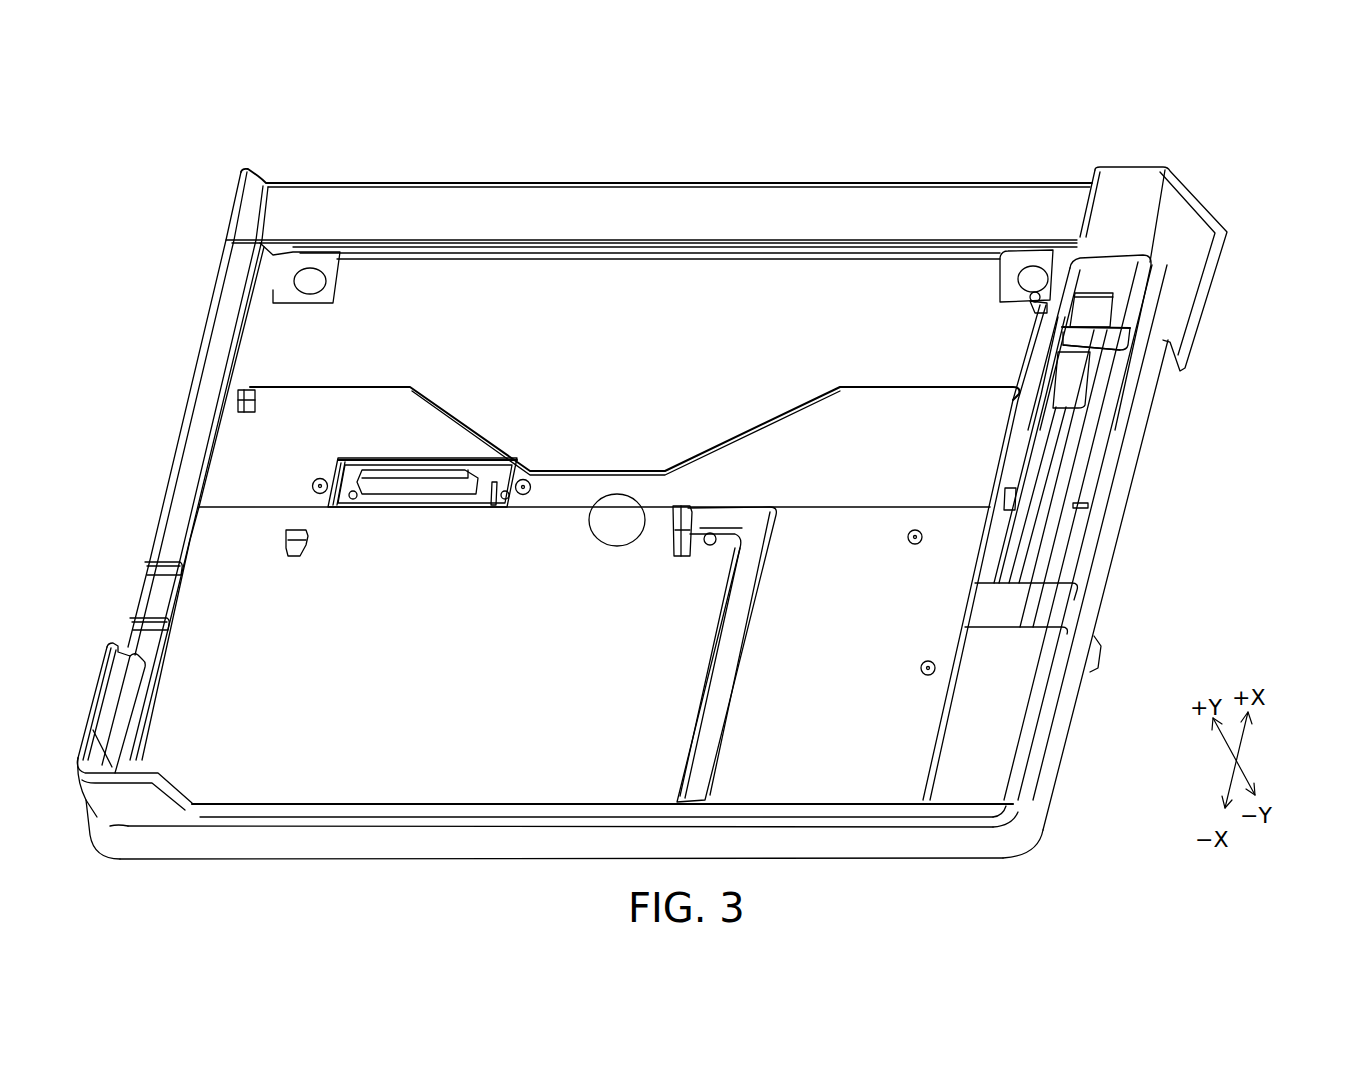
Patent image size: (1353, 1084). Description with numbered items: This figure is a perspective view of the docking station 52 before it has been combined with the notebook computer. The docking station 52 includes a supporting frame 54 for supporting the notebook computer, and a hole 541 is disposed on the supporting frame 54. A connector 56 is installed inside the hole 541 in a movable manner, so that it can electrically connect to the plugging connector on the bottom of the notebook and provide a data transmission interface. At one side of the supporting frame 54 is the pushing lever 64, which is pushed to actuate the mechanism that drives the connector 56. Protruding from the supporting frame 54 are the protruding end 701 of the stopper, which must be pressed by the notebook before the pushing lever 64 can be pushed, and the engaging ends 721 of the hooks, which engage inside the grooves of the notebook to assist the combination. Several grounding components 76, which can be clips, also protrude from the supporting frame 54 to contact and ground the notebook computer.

The docking station 52 is at (707, 489).
The supporting frame 54 is at (176, 491).
The hole 541 is at (330, 485).
The connector 56 is at (420, 478).
The pushing lever 64 is at (1107, 338).
The grounding component 76 is at (535, 484).
The protruding end 701 is at (937, 670).
The engaging end 721 is at (246, 386).